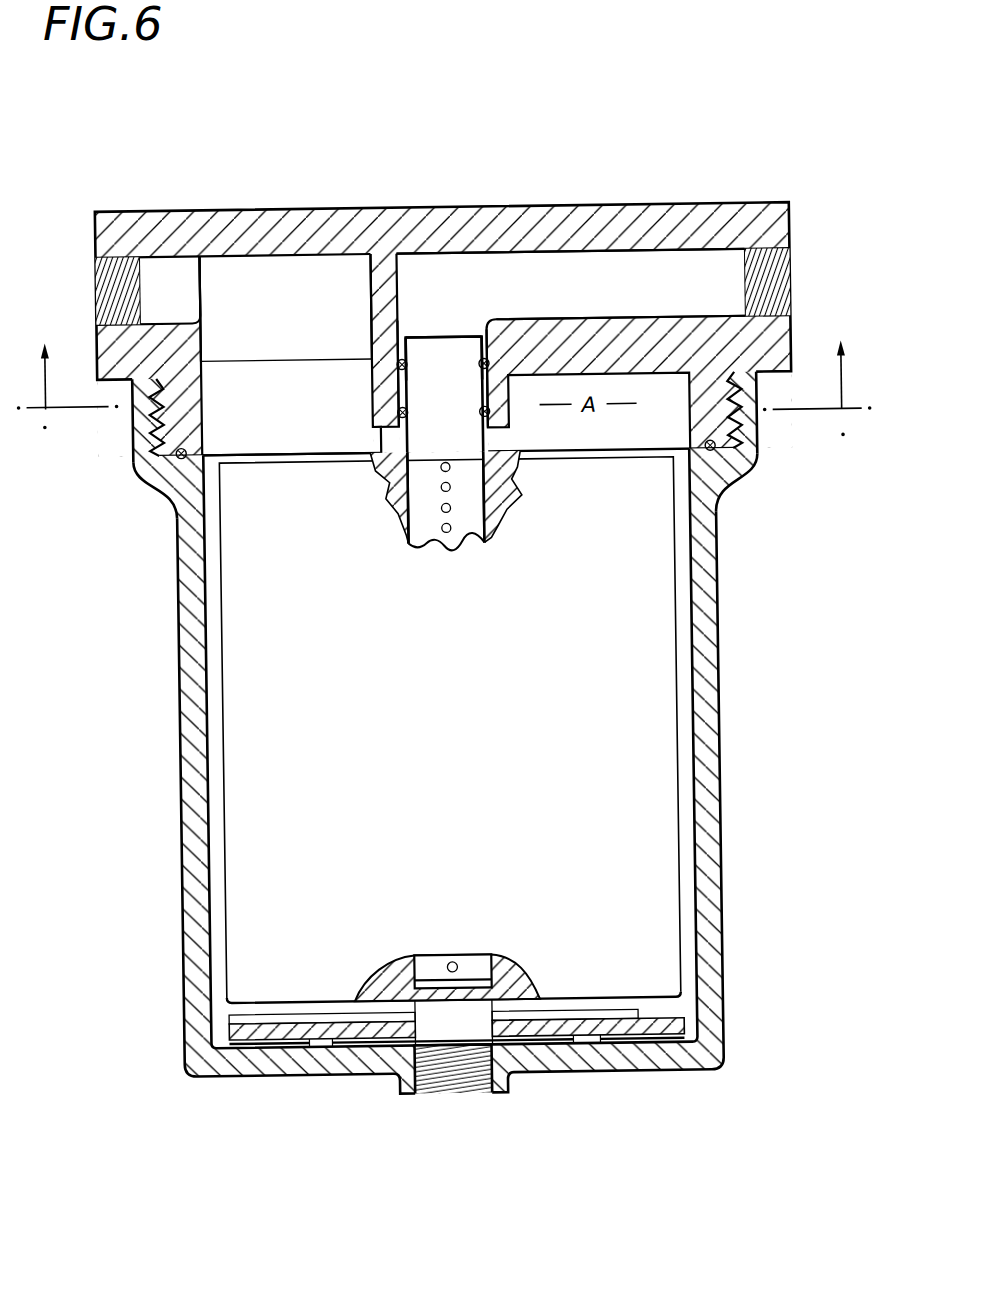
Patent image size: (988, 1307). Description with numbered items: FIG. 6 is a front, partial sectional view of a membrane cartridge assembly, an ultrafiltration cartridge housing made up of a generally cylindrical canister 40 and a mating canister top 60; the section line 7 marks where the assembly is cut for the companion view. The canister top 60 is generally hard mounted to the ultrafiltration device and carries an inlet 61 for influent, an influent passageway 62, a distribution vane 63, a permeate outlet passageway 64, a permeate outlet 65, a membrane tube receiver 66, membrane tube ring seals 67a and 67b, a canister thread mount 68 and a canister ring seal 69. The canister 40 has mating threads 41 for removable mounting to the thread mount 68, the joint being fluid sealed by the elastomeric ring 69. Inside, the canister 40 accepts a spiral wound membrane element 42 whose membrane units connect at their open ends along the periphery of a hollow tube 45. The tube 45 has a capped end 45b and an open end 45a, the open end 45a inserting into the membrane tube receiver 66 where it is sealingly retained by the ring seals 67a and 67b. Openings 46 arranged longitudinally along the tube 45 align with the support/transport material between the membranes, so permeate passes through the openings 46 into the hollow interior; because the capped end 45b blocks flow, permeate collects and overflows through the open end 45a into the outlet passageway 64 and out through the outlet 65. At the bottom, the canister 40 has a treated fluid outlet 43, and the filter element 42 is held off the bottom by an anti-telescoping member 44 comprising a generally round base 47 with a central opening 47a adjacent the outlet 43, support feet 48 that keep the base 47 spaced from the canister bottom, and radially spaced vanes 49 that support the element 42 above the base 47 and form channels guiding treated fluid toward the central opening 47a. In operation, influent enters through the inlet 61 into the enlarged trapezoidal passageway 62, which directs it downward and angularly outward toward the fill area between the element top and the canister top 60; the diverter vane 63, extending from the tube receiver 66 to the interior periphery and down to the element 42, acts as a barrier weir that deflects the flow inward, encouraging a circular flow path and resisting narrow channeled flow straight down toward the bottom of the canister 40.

The section line 7-7' 7 is at (445, 396).
The canister 40 is at (721, 749).
The mating threads 41 is at (153, 438).
The spiral wound membrane element 42 is at (651, 731).
The treated fluid outlet 43 is at (451, 1085).
The anti-telescoping member 44 is at (685, 1028).
The hollow tube 45 is at (412, 500).
The open end 45a is at (459, 345).
The capped end 45b is at (448, 961).
The openings 46 is at (452, 508).
The base 47 is at (645, 1035).
The central opening 47a is at (427, 1025).
The support feet 48 is at (325, 1041).
The radial spaced vanes 49 is at (295, 1016).
The canister top 60 is at (604, 206).
The inlet 61 is at (117, 273).
The influent passageway 62 is at (300, 291).
The distribution vane 63 is at (297, 383).
The permeate outlet passageway 64 is at (660, 293).
The permeate outlet 65 is at (778, 265).
The membrane tube receiver 66 is at (490, 334).
The membrane tube ring seal 67a is at (484, 368).
The membrane tube ring seal 67b is at (484, 416).
The canister thread mount 68 is at (162, 391).
The canister ring seal 69 is at (154, 478).